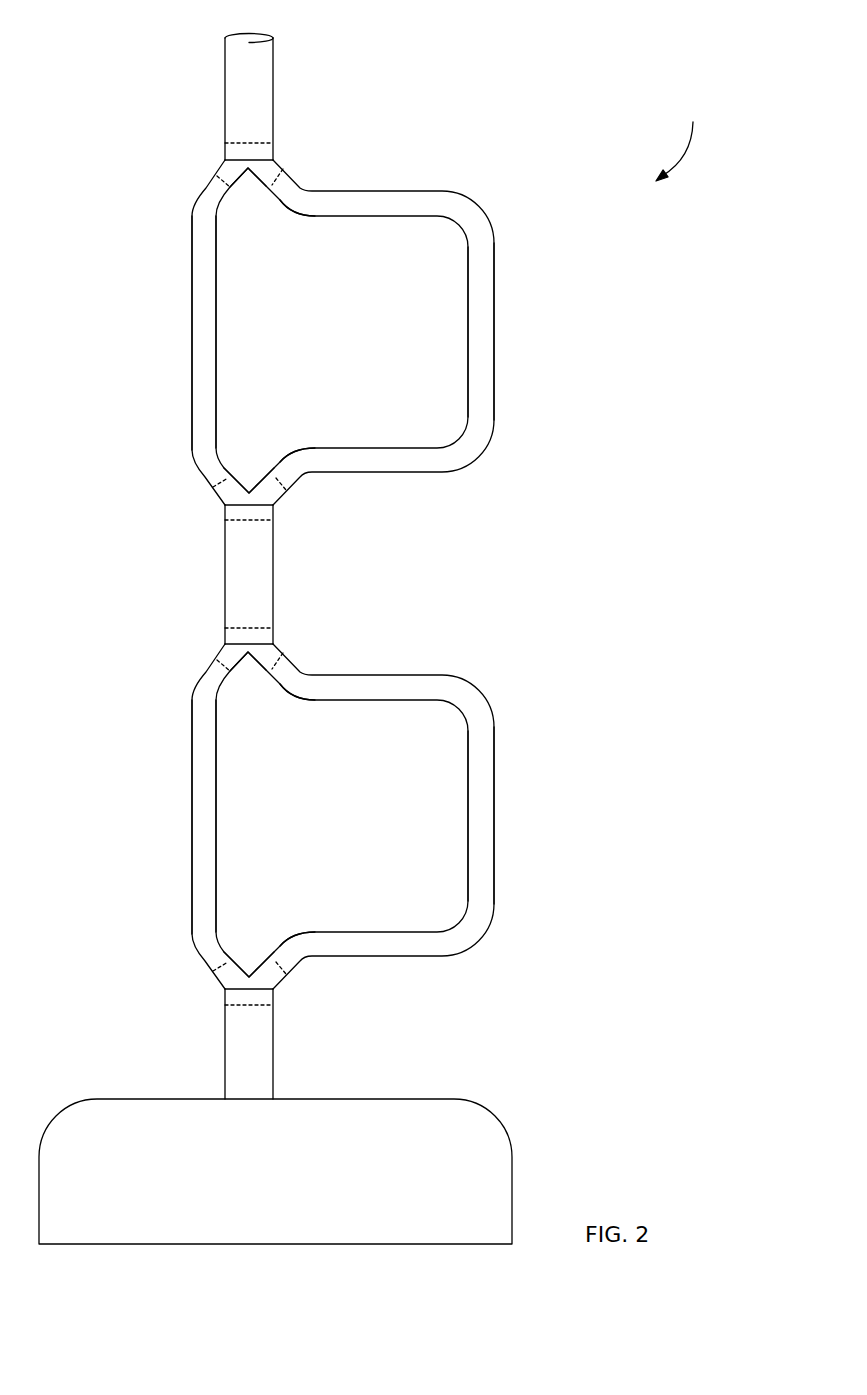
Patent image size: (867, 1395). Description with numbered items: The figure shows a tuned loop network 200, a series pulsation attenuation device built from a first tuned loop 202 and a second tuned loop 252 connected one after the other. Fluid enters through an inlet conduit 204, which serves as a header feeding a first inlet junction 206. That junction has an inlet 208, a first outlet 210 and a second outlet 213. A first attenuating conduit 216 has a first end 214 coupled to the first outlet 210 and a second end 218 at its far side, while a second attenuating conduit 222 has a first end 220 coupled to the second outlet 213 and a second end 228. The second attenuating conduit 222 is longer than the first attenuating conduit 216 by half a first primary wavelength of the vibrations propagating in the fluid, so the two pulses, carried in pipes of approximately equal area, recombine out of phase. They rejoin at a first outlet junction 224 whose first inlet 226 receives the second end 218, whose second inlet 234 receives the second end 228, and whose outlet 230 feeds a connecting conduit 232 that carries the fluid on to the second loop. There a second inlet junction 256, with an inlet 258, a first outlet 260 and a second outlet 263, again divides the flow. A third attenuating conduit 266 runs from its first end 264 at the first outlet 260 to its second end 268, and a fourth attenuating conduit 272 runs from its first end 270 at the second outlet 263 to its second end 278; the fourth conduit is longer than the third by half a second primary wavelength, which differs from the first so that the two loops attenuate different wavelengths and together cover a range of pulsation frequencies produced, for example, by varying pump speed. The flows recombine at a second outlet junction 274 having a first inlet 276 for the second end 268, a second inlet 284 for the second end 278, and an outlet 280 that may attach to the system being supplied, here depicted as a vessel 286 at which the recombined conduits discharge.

The tuned loop network 200 is at (685, 136).
The first tuned loop 202 is at (442, 191).
The inlet conduit 204 is at (258, 84).
The first inlet junction 206 is at (242, 163).
The inlet 208 is at (250, 148).
The first outlet 210 is at (232, 177).
The second outlet 213 is at (277, 167).
The first end 214 is at (223, 177).
The first attenuating conduit 216 is at (198, 321).
The second end 218 is at (218, 482).
The first end 220 is at (282, 187).
The second attenuating conduit 222 is at (482, 328).
The first outlet junction 224 is at (245, 502).
The first inlet 226 is at (237, 485).
The second end 228 is at (283, 465).
The outlet 230 is at (248, 515).
The connecting conduit 232 is at (238, 565).
The second inlet 234 is at (277, 497).
The second tuned loop 252 is at (432, 675).
The second inlet junction 256 is at (248, 645).
The inlet 258 is at (248, 632).
The first outlet 260 is at (233, 663).
The second outlet 263 is at (277, 653).
The first end 264 is at (223, 661).
The third attenuating conduit 266 is at (198, 814).
The second end 268 is at (218, 966).
The first end 270 is at (282, 673).
The fourth attenuating conduit 272 is at (483, 810).
The second outlet junction 274 is at (245, 987).
The first inlet 276 is at (237, 970).
The second end 278 is at (282, 950).
The outlet 280 is at (248, 999).
The second inlet 284 is at (277, 979).
The vessel 286 is at (348, 1118).